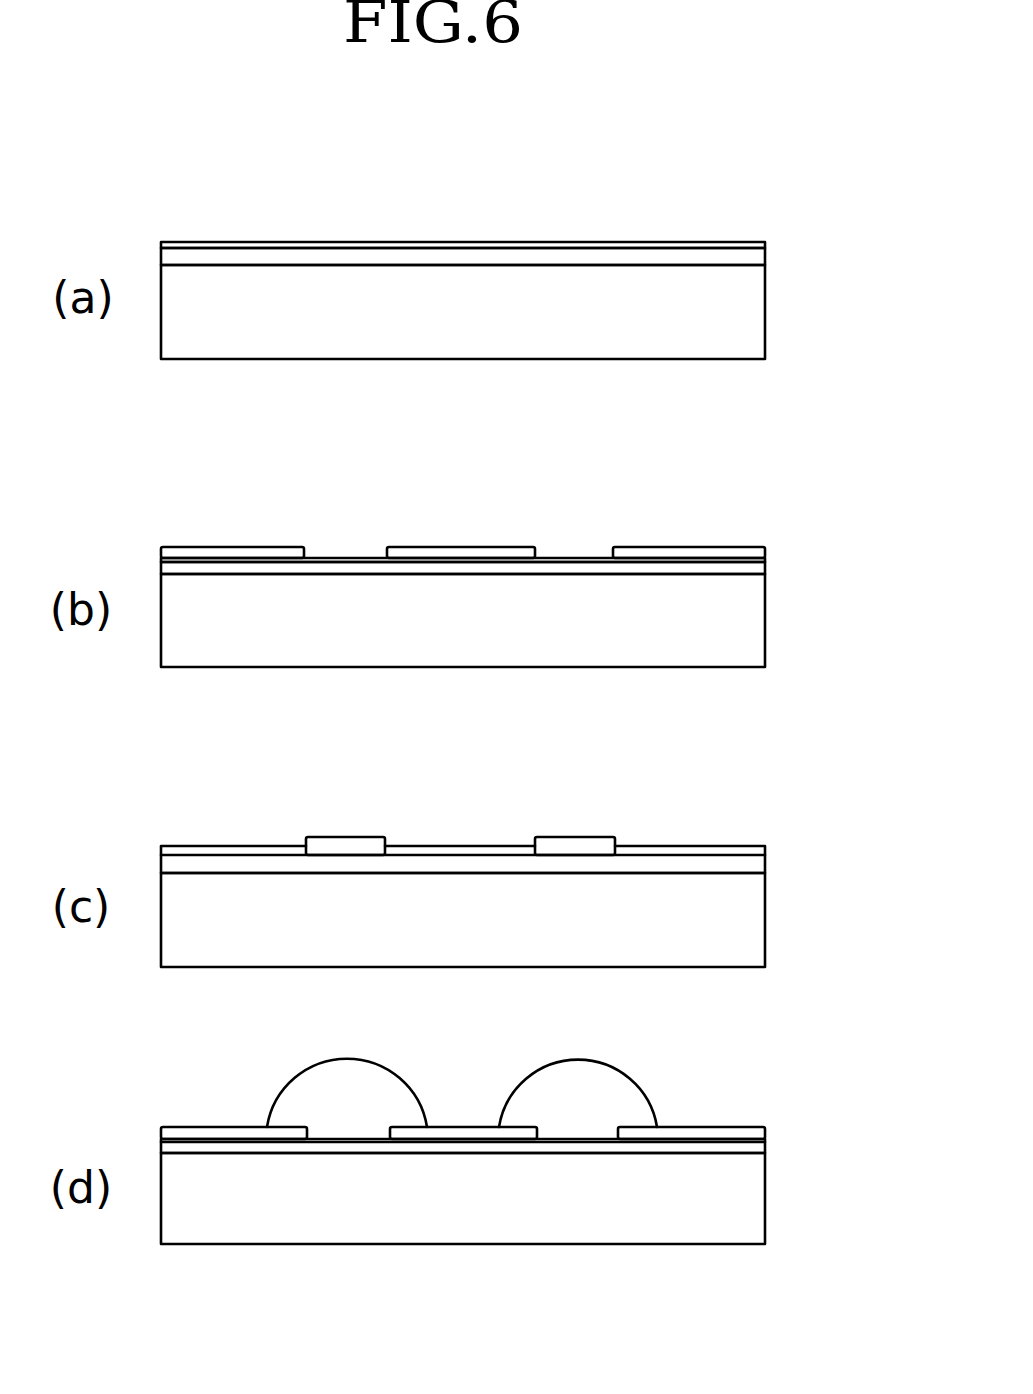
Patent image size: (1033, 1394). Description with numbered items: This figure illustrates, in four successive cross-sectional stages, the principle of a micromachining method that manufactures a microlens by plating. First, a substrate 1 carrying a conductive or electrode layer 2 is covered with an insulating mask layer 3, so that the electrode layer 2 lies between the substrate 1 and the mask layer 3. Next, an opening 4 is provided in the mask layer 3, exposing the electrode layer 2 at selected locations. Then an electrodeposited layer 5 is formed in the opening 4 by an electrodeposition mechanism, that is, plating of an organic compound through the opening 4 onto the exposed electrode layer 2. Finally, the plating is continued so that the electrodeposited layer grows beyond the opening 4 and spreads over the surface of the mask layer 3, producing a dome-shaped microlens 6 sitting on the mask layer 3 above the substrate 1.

The substrate 1 is at (760, 312).
The conductive or electrode layer 2 is at (766, 248).
The insulating mask layer 3 is at (690, 240).
The opening 4 is at (560, 557).
The electrodeposited layer 5 is at (555, 837).
The microlens 6 is at (380, 1060).